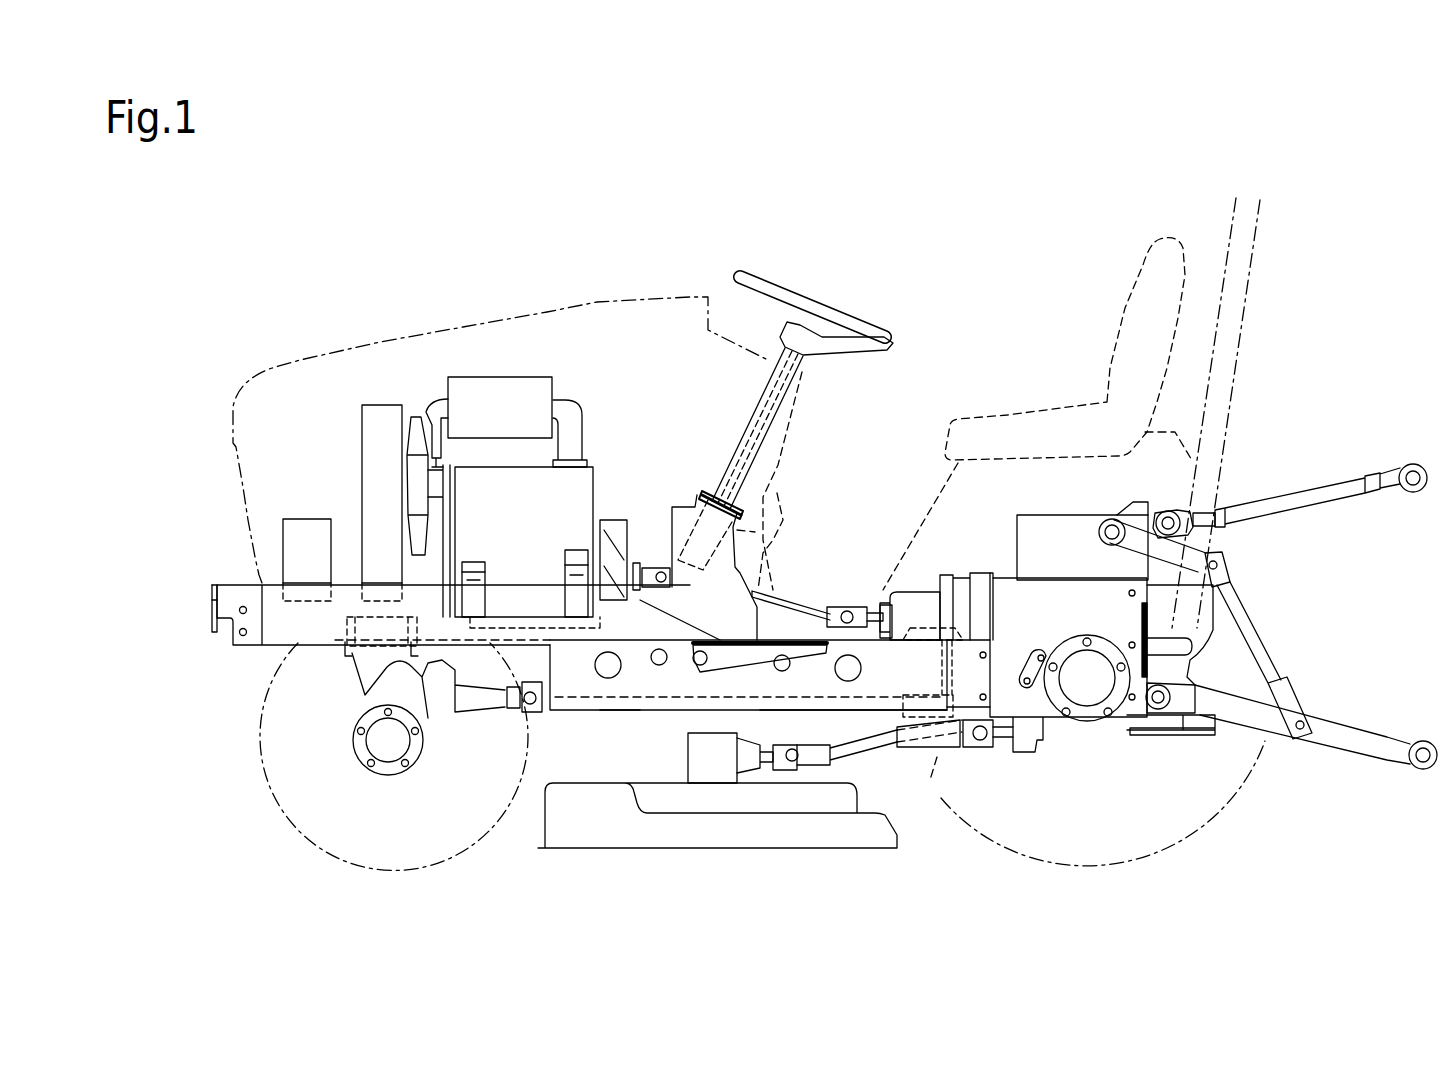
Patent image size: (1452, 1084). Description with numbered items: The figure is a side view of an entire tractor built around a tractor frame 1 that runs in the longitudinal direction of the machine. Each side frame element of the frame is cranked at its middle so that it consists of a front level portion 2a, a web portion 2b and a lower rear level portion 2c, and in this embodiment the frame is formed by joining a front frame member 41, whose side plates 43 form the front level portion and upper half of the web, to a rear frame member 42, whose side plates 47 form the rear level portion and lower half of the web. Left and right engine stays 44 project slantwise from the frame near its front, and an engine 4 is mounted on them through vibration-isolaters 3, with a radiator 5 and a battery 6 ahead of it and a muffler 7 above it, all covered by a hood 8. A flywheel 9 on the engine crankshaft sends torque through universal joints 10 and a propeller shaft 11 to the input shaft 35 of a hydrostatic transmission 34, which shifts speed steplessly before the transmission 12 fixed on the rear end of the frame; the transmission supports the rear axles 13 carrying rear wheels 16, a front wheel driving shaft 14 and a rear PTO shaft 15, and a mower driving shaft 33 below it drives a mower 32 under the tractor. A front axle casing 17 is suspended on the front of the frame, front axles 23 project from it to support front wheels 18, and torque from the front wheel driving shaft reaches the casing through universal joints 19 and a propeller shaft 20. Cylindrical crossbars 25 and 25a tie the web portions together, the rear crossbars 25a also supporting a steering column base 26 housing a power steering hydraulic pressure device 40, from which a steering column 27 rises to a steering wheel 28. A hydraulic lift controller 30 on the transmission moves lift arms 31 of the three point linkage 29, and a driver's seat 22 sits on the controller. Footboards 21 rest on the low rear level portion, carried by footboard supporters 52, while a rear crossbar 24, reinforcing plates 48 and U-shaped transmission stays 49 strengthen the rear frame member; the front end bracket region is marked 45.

The tractor frame 1 is at (165, 609).
The front level portion 2a is at (268, 660).
The web portion 2b is at (748, 716).
The rear level portion 2c is at (787, 717).
The vibration-isolater 3 is at (480, 575).
The engine 4 is at (593, 492).
The radiator 5 is at (372, 468).
The battery 6 is at (305, 525).
The muffler 7 is at (513, 378).
The hood 8 is at (597, 300).
The flywheel 9 is at (630, 520).
The universal joints 10 is at (662, 565).
The propeller shaft 11 is at (783, 600).
The transmission 12 is at (985, 560).
The rear axle 13 is at (1087, 700).
The front wheel driving shaft 14 is at (958, 815).
The rear PTO shaft 15 is at (1197, 650).
The rear wheel 16 is at (1000, 860).
The front axle casing 17 is at (445, 720).
The front wheel 18 is at (300, 827).
The universal joints 19 is at (535, 710).
The propeller shaft 20 is at (618, 717).
The footboard 21 is at (772, 538).
The driver's seat 22 is at (1127, 305).
The front axle 23 is at (365, 748).
The rear crossbar 24 is at (330, 657).
The crossbar 25 is at (659, 667).
The crossbar 25a is at (712, 660).
The steering column base 26 is at (690, 505).
The steering column 27 is at (766, 418).
The steering wheel 28 is at (890, 340).
The three point linkage 29 is at (1360, 780).
The hydraulic lift controller 30 is at (1067, 530).
The lift arm 31 is at (1210, 525).
The mower 32 is at (560, 830).
The mower driving shaft 33 is at (1000, 745).
The hydrostatic transmission (HST) 34 is at (935, 585).
The input shaft 35 is at (878, 590).
The power steering hydraulic pressure device 40 is at (782, 462).
The front frame member 41 is at (243, 585).
The rear frame member 42 is at (839, 787).
The side plate 43 is at (217, 562).
The engine stay 44 is at (570, 595).
The bolt hole 45 is at (212, 620).
The side plate 47 is at (855, 688).
The reinforcing plate 48 is at (958, 638).
The transmission stay 49 is at (1021, 659).
The footboard supporter 52 is at (787, 673).